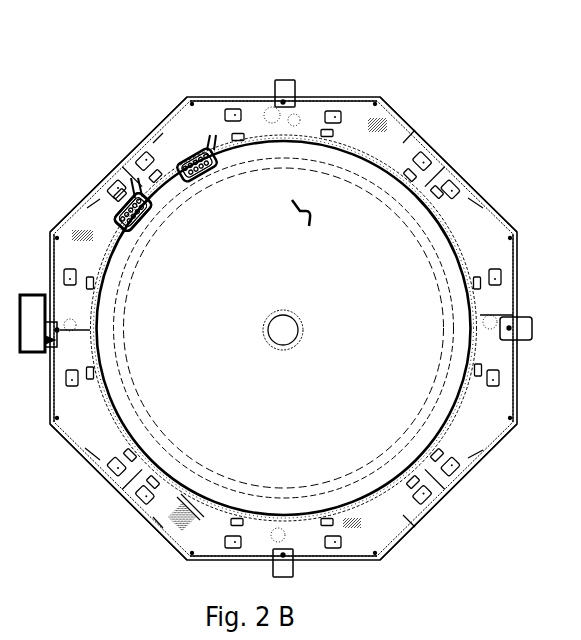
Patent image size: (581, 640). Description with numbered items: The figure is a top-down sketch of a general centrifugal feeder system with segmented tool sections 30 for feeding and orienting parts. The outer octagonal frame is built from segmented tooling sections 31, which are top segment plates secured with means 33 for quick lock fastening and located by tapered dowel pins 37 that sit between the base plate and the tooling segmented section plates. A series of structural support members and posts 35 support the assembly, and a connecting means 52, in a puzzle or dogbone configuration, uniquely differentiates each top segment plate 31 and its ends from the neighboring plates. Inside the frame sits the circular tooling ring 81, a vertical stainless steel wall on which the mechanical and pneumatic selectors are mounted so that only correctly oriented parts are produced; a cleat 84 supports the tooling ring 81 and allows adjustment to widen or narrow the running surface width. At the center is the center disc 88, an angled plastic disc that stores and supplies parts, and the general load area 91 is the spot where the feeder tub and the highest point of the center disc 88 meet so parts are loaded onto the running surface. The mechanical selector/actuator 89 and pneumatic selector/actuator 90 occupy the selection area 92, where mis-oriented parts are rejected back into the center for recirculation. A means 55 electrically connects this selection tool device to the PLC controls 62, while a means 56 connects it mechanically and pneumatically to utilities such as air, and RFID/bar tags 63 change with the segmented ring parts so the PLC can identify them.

The centrifugal feeder system with segmented tool sections 30 is at (460, 537).
The segmented tooling section 31 is at (47, 305).
The means for quick lock fastening 33 is at (0, 160).
The structural support members and posts 35 is at (290, 83).
The tapered dowel pins 37 is at (381, 100).
The connecting means 52 is at (273, 130).
The means for electrically connecting the selection tool device 55 is at (135, 115).
The means for mechanically and pneumatically connecting the selection tool device 56 is at (133, 212).
The PLC controls 62 is at (35, 327).
The RFID/bar tags 63 is at (82, 233).
The tooling ring 81 is at (467, 247).
The cleat 84 is at (440, 200).
The center disc 88 is at (305, 208).
The mechanical selector/actuator 89 is at (252, 86).
The pneumatic selector/actuator 90 is at (188, 155).
The general load area 91 is at (286, 322).
The selection area 92 is at (133, 212).